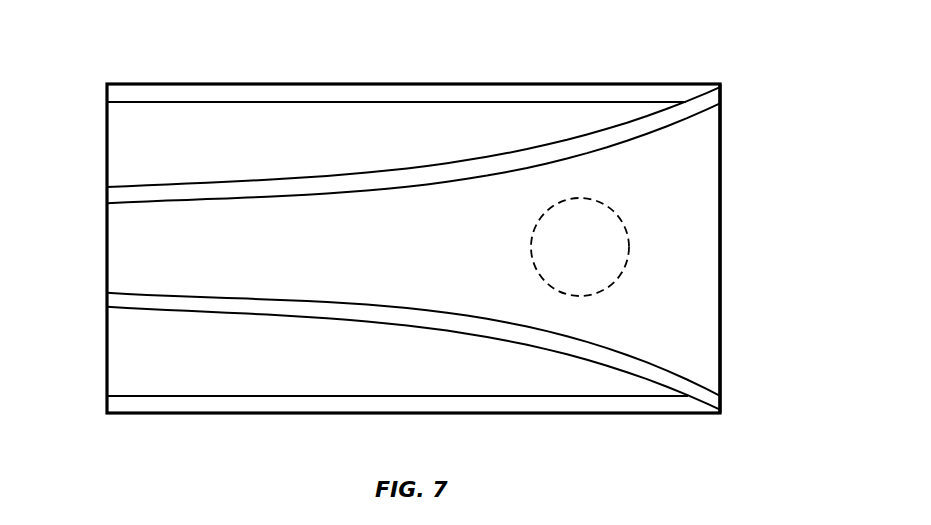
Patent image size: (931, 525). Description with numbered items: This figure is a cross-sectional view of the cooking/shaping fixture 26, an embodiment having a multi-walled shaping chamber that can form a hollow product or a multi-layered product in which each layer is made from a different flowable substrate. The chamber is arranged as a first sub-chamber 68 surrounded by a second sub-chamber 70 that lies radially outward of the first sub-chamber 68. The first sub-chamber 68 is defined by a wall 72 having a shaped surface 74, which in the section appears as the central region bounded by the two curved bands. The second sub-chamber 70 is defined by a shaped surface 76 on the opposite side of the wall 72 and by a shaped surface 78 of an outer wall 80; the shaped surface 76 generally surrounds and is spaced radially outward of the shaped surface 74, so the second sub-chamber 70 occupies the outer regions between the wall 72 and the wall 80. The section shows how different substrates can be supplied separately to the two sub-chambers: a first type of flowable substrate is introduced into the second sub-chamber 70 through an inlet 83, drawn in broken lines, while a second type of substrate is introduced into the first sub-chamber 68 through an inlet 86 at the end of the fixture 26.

The fixture 26 is at (516, 49).
The first sub-chamber 68 is at (331, 260).
The second sub-chamber 70 is at (331, 156).
The wall 72 is at (381, 248).
The shaped surface 74 is at (202, 248).
The shaped surface 76 is at (197, 250).
The shaped surface 78 is at (397, 249).
The wall 80 is at (364, 113).
The inlet 83 is at (597, 268).
The inlet 86 is at (750, 248).